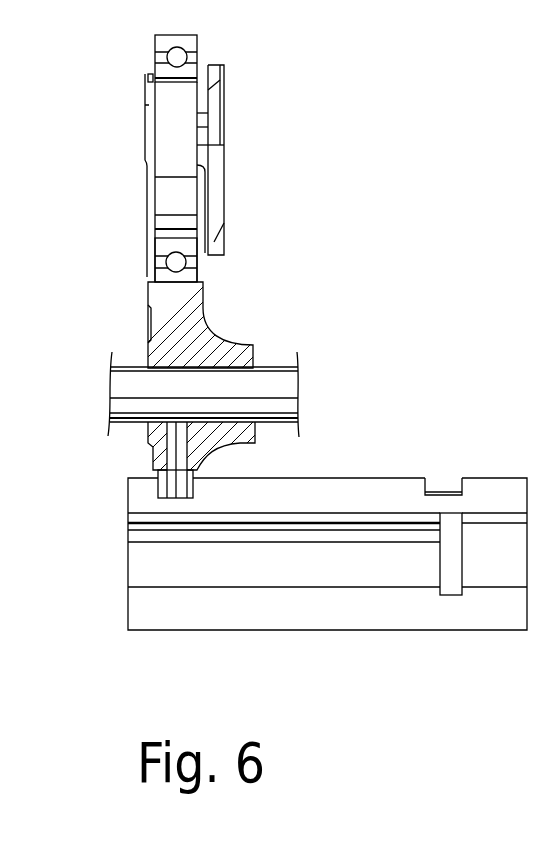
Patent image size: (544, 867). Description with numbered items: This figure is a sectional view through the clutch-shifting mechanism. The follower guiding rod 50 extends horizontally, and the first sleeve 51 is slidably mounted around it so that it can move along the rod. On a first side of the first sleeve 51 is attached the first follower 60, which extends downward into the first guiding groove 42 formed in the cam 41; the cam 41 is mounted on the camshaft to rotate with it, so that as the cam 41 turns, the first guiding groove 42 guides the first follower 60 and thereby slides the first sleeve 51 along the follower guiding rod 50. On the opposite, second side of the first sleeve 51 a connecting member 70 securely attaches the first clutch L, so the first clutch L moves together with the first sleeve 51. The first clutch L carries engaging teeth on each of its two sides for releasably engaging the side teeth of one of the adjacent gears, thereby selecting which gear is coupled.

The connecting member 70 is at (158, 295).
The first clutch L is at (205, 133).
The first sleeve 51 is at (223, 350).
The follower guiding rod 50 is at (283, 398).
The first guiding groove 42 is at (197, 482).
The first follower 60 is at (165, 490).
The cam 41 is at (450, 488).